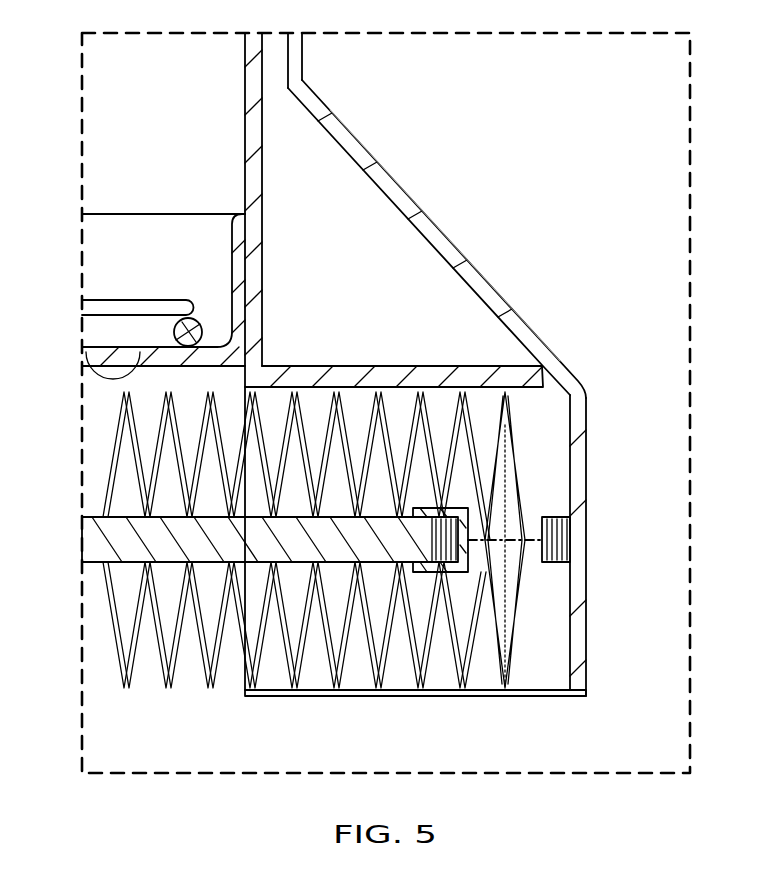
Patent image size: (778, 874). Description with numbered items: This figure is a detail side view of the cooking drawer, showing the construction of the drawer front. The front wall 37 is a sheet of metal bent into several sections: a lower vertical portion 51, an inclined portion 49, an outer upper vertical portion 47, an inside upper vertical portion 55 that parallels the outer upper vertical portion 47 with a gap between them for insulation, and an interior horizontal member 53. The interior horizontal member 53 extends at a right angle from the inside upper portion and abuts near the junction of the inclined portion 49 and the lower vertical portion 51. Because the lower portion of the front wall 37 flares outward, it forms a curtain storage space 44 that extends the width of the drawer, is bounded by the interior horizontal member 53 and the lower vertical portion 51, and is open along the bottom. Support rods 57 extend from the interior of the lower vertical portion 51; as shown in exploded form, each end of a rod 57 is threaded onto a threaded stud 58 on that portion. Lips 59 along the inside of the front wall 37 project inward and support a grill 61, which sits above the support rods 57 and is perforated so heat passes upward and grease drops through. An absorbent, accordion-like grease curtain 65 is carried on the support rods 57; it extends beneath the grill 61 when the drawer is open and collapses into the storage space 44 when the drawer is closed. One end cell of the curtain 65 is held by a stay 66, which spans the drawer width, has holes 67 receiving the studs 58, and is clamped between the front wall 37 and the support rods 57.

The front wall 37 is at (425, 208).
The curtain storage space 44 is at (534, 692).
The outer upper vertical portion 47 is at (303, 53).
The inclined portion 49 is at (506, 300).
The lower vertical portion 51 is at (588, 403).
The interior horizontal member 53 is at (300, 366).
The upper vertical portion 55 is at (245, 118).
The support rods 57 is at (84, 512).
The stud 58 is at (548, 516).
The lips 59 is at (88, 347).
The grill 61 is at (130, 299).
The grease curtain 65 is at (160, 667).
The stay 66 is at (522, 500).
The holes 67 is at (507, 563).